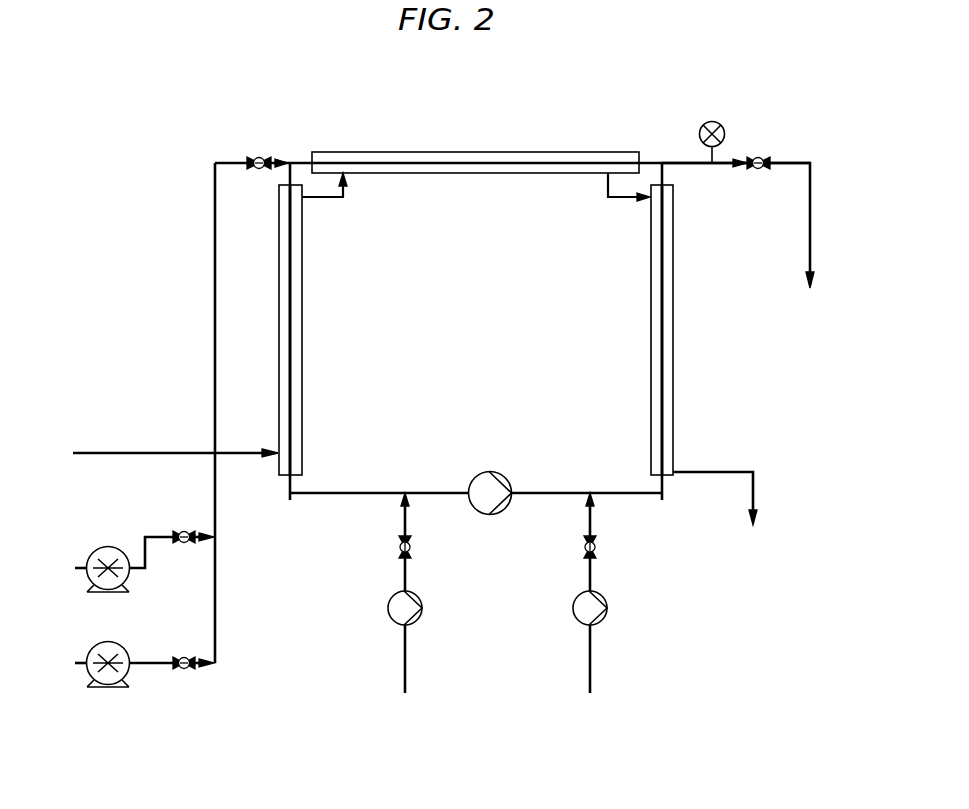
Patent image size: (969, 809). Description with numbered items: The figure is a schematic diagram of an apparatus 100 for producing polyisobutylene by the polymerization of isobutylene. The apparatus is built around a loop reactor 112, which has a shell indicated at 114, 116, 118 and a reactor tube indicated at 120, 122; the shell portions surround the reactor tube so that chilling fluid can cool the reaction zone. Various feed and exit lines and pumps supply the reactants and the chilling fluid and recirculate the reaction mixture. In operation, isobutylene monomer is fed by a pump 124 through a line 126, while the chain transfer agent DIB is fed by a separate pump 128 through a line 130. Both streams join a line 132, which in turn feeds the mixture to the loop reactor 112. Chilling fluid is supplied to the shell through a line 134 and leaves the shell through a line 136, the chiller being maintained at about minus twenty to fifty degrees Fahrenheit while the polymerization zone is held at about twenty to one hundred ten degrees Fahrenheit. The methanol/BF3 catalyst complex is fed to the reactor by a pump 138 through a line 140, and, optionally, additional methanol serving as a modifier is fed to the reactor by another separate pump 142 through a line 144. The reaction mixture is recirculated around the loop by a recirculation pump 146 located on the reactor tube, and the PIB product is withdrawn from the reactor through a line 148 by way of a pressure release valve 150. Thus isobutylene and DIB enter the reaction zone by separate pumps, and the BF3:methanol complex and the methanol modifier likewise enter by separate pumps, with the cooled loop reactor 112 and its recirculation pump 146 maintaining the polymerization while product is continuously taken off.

The polymerization system 100 is at (286, 90).
The loop reactor 112 is at (473, 298).
The shell 114 is at (302, 345).
The shell 116 is at (432, 152).
The shell 118 is at (650, 380).
The reactor tube 120 is at (290, 408).
The reactor tube 122 is at (665, 403).
The pump 124 is at (90, 650).
The line 126 is at (153, 660).
The pump 128 is at (90, 555).
The line 130 is at (152, 533).
The line 132 is at (213, 287).
The line 134 is at (112, 453).
The line 136 is at (742, 472).
The pump 138 is at (390, 602).
The line 140 is at (402, 528).
The pump 142 is at (605, 602).
The line 144 is at (592, 520).
The pump 146 is at (465, 460).
The line 148 is at (673, 162).
The pressure release valve 150 is at (765, 157).